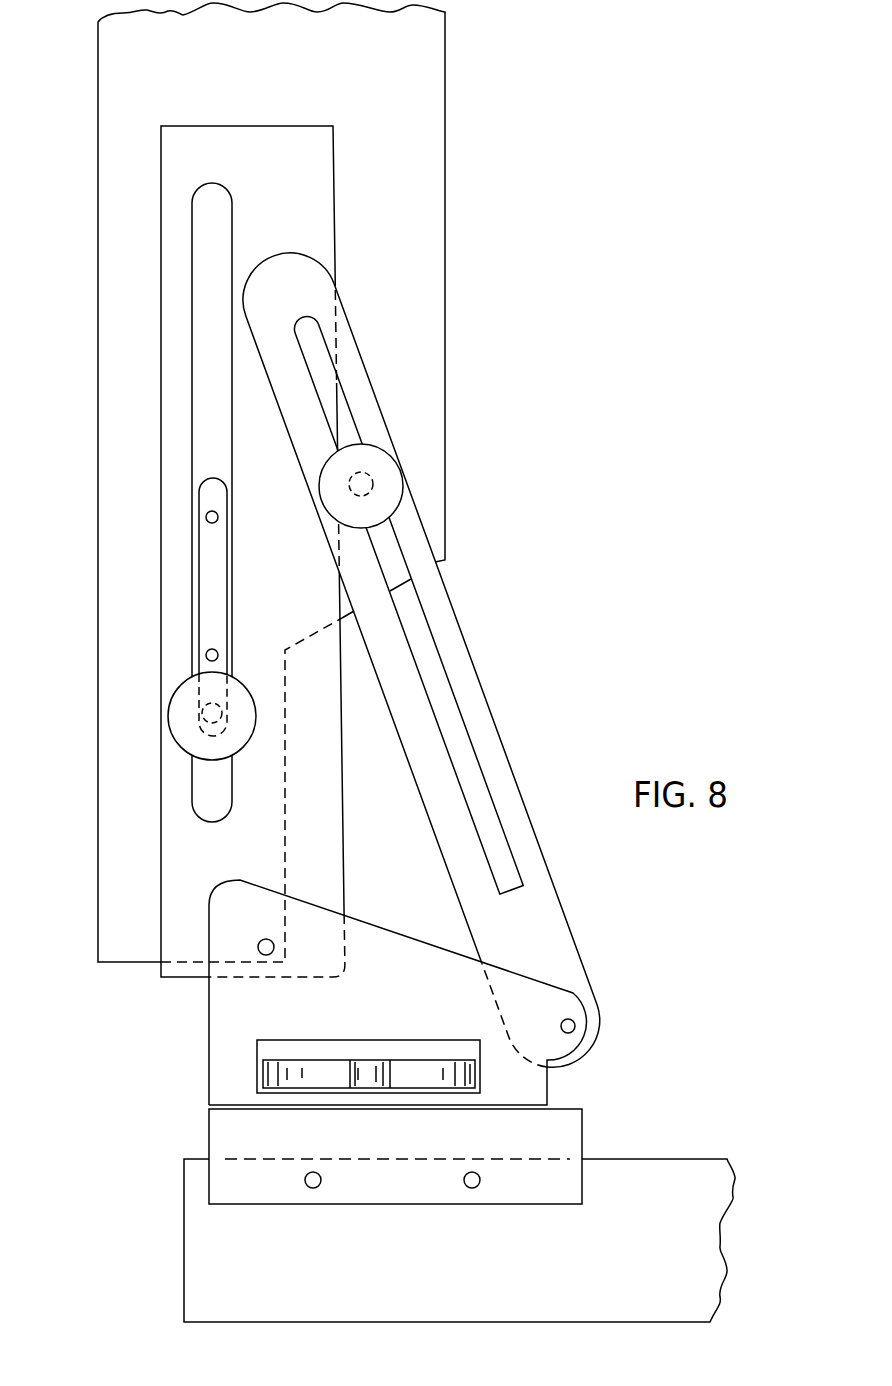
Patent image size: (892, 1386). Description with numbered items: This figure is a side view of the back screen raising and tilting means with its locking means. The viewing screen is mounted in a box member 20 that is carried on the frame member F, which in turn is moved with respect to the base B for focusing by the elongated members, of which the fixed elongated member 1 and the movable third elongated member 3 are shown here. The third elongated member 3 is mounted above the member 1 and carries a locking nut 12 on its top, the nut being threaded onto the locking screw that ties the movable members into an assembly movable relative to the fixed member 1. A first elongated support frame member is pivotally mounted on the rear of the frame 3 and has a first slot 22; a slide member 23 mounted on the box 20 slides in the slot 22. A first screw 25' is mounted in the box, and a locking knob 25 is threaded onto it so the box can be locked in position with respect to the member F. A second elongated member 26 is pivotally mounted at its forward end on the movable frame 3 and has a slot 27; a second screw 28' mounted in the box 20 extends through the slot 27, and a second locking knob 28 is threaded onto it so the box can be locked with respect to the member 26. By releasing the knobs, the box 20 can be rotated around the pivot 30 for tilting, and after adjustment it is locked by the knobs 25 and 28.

The box member 20 is at (97, 266).
The frame member F is at (161, 547).
The first slot 22 is at (236, 461).
The slide member 23 is at (228, 530).
The locking knob 25 is at (220, 708).
The screw 25' is at (240, 736).
The second elongated member 26 is at (421, 660).
The slot 27 is at (421, 603).
The second locking knob 28 is at (371, 473).
The screw 28' is at (397, 472).
The third elongated member 3 is at (208, 1030).
The pivot 30 is at (266, 939).
The locking nut 12 is at (313, 1060).
The elongated member 1 is at (209, 1133).
The base B is at (184, 1222).